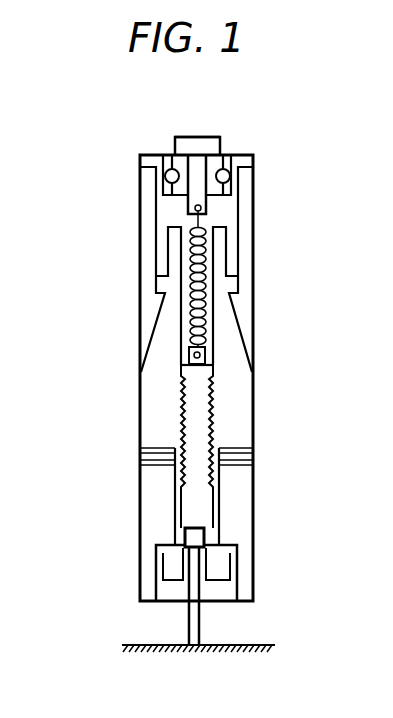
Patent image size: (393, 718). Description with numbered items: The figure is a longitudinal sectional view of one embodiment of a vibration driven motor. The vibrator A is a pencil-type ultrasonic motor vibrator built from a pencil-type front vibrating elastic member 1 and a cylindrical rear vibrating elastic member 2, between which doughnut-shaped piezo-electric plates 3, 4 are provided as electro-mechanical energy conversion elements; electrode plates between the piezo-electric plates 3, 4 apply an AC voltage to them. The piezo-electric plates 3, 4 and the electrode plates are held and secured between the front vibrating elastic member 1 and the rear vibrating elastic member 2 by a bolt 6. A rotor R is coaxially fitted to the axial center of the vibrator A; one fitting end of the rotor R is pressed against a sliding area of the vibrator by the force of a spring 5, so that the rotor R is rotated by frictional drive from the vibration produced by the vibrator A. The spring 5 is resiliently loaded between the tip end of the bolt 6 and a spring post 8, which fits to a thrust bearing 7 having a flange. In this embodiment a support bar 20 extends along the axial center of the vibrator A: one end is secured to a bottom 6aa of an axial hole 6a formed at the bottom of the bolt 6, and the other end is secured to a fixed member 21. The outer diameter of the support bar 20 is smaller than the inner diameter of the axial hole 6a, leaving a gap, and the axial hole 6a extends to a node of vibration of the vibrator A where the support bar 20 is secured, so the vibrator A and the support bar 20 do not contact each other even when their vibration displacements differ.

The vibrator A is at (117, 450).
The front vibrating elastic member 1 is at (245, 405).
The rear vibrating elastic member 2 is at (240, 525).
The piezo-electric plate 3 is at (248, 449).
The piezo-electric plate 4 is at (252, 462).
The spring 5 is at (203, 216).
The bolt 6 is at (192, 399).
The axial hole 6a is at (183, 561).
The bottom of the axial hole 6aa is at (187, 523).
The thrust bearing 7 is at (253, 157).
The spring post 8 is at (202, 137).
The rotor R is at (240, 293).
The support bar 20 is at (200, 616).
The fixed member 21 is at (147, 648).